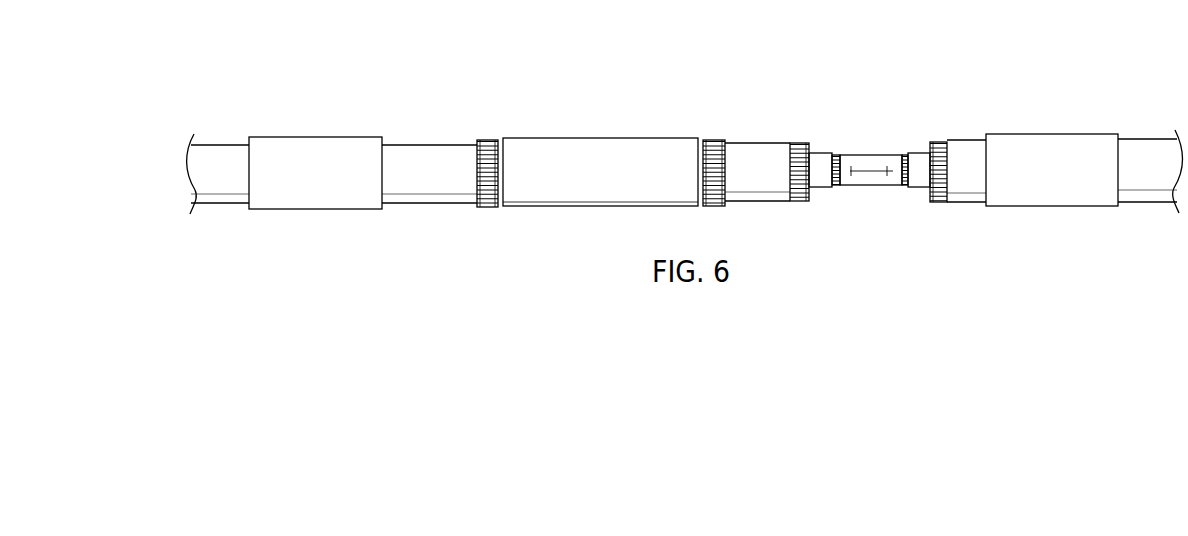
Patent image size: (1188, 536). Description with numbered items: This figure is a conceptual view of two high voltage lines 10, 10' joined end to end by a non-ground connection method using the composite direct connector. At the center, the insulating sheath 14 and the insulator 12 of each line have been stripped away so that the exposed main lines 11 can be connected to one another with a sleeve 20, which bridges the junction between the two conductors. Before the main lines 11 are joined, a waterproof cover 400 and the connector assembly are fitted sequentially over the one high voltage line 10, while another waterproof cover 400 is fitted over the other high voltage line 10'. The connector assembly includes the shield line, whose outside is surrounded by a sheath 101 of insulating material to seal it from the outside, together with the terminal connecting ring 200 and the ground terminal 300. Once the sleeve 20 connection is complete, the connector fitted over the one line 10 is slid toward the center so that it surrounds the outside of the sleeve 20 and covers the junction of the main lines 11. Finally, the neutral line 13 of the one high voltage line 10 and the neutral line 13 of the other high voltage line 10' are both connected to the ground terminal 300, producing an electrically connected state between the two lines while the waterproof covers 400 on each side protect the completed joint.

The high voltage line 10 is at (218, 136).
The high voltage line 10' is at (1150, 134).
The waterproof cover 400 is at (303, 157).
The ground terminal 300 is at (491, 147).
The sheath 101 is at (607, 150).
The terminal connecting ring 200 is at (702, 143).
The insulating sheath 14 is at (746, 155).
The neutral line 13 is at (796, 150).
The insulator 12 is at (820, 155).
The main line 11 is at (837, 155).
The sleeve 20 is at (873, 157).